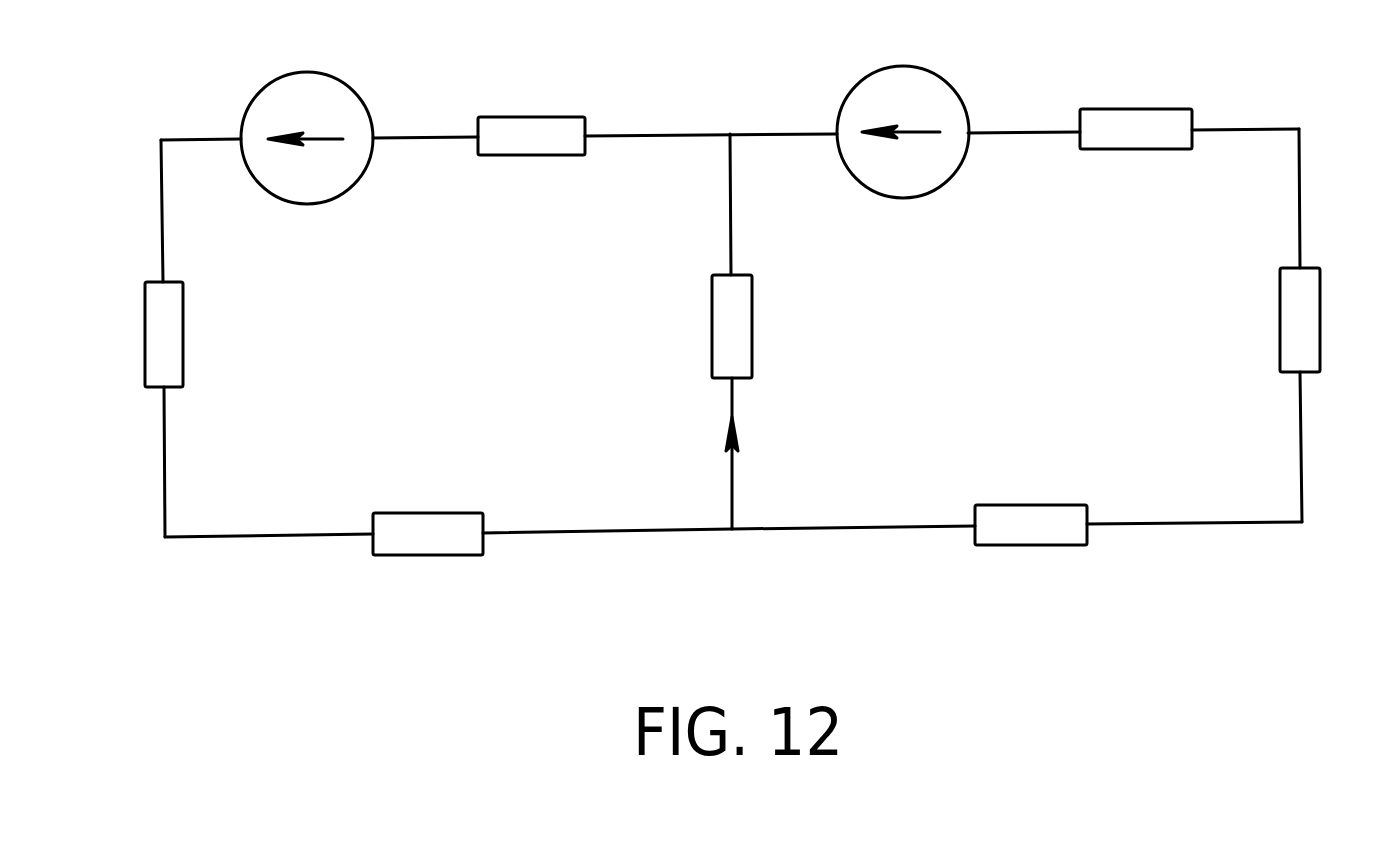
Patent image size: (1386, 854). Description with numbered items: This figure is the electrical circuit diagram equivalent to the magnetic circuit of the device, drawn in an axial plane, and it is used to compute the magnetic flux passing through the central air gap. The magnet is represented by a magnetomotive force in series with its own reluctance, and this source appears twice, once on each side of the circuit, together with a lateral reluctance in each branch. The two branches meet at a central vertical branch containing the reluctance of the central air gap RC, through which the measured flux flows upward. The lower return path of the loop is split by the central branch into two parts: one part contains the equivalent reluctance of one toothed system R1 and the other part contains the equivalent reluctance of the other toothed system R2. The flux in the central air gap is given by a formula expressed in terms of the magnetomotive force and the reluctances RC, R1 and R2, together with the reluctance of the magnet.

The reluctance of the central air gap RC is at (767, 326).
The equivalent reluctance of one toothed system R1 is at (1043, 569).
The equivalent reluctance of the other toothed system R2 is at (428, 561).